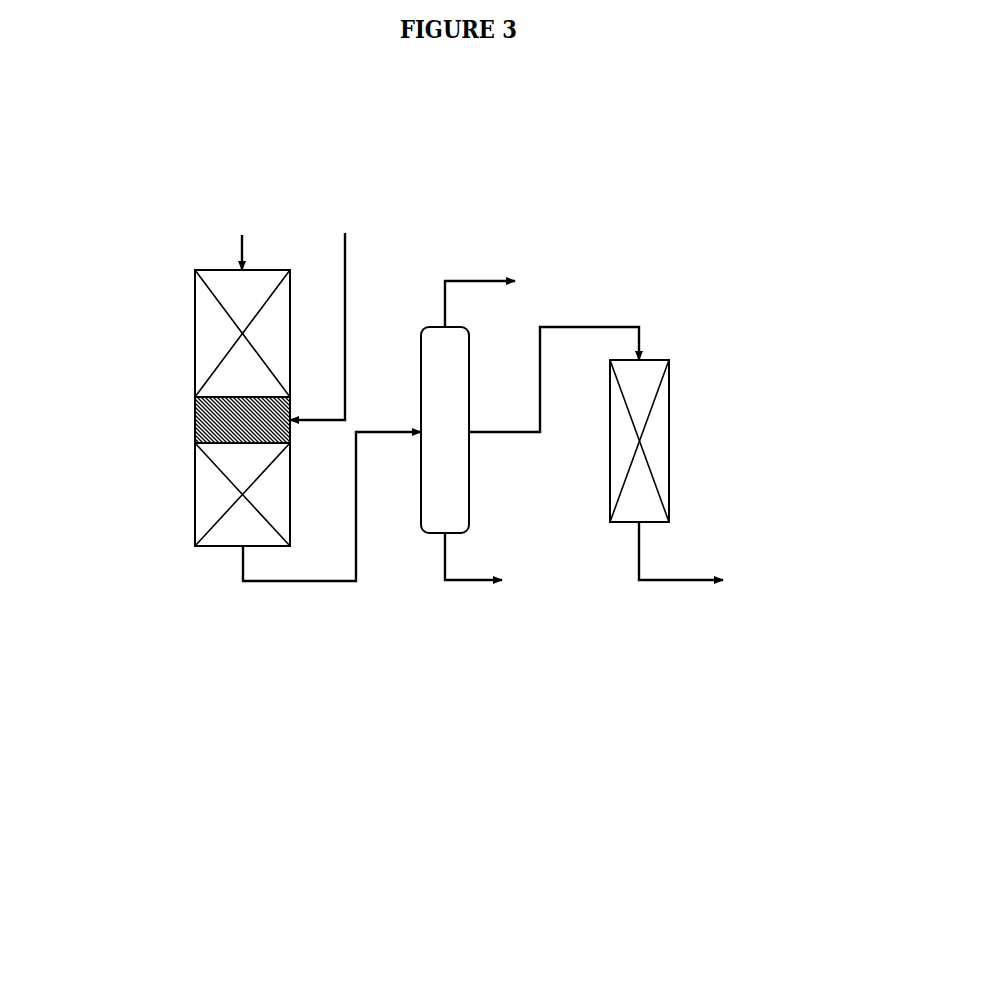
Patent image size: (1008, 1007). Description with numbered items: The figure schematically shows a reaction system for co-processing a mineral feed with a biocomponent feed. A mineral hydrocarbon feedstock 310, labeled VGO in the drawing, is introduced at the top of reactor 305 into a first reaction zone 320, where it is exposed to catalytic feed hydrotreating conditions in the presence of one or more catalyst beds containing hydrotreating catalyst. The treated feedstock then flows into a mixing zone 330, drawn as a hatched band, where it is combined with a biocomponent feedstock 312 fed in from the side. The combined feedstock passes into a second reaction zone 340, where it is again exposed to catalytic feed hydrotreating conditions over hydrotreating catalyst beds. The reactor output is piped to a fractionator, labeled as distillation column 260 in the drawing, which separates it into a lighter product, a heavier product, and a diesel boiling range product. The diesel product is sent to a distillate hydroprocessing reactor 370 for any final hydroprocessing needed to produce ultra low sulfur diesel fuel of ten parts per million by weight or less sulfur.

The reactor 305 is at (188, 733).
The mineral hydrocarbon feedstock 310 is at (265, 207).
The biocomponent feedstock 312 is at (355, 280).
The first reaction zone 320 is at (190, 342).
The mixing zone 330 is at (190, 418).
The second reaction zone 340 is at (190, 492).
The distillation column 260 is at (418, 528).
The distillate hydroprocessing reactor 370 is at (680, 410).